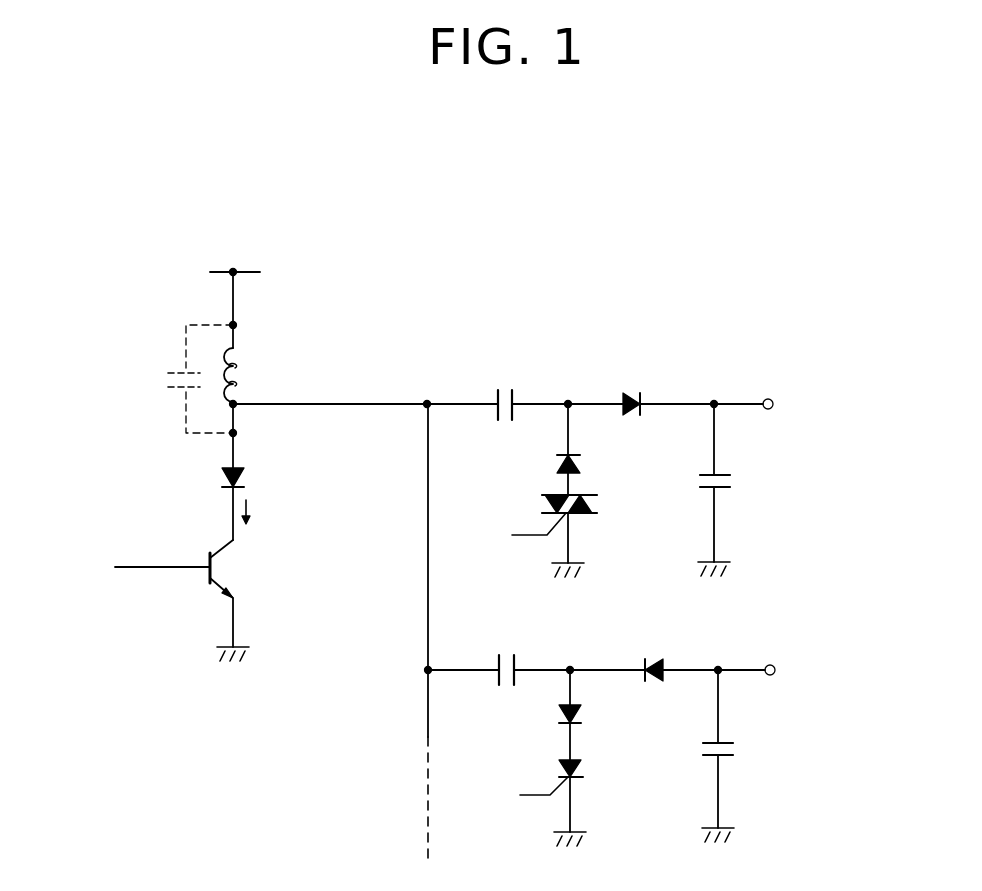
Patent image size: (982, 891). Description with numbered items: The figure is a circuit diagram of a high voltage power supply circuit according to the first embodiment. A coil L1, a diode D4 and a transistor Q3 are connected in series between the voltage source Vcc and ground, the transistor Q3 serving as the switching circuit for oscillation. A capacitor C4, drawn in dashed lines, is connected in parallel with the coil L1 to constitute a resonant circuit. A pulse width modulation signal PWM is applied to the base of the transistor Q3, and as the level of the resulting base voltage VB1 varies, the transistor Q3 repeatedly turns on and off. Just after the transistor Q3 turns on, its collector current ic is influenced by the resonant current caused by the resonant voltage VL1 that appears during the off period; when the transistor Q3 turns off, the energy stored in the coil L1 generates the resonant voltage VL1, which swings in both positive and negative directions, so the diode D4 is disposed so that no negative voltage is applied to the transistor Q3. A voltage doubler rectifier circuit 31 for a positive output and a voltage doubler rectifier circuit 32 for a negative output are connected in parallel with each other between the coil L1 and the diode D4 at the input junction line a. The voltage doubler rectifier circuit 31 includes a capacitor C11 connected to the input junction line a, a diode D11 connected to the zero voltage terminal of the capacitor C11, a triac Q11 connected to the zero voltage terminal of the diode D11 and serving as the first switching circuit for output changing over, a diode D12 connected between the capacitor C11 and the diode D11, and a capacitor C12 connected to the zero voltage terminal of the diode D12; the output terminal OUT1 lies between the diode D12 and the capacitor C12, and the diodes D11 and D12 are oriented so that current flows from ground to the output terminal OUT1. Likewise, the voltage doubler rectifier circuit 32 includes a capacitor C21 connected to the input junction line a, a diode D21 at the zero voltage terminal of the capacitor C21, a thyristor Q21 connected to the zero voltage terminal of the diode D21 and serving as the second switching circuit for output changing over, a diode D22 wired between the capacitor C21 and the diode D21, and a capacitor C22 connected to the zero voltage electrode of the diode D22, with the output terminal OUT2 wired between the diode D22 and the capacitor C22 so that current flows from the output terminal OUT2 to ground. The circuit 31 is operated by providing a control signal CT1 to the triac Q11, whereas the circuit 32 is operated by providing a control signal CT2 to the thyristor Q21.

The voltage source Vcc is at (265, 273).
The coil L1 is at (249, 375).
The capacitor C4 is at (165, 379).
The resonant voltage VL1 is at (320, 389).
The input junction line a is at (385, 404).
The diode D4 is at (238, 470).
The collector current ic is at (263, 513).
The transistor Q3 is at (222, 569).
The pulse width modulation signal PWM is at (78, 568).
The base voltage VB1 is at (157, 542).
The capacitor C11 is at (498, 386).
The diode D12 is at (632, 392).
The voltage doubler rectifier circuit 31 is at (693, 342).
The output terminal OUT1 is at (817, 404).
The diode D11 is at (580, 462).
The triac Q11 is at (590, 512).
The control signal CT1 is at (488, 535).
The capacitor C12 is at (730, 482).
The capacitor C21 is at (497, 656).
The diode D22 is at (647, 668).
The voltage doubler rectifier circuit 32 is at (700, 643).
The output terminal OUT2 is at (819, 670).
The diode D21 is at (582, 718).
The thyristor Q21 is at (582, 773).
The control signal CT2 is at (486, 795).
The capacitor C22 is at (727, 748).